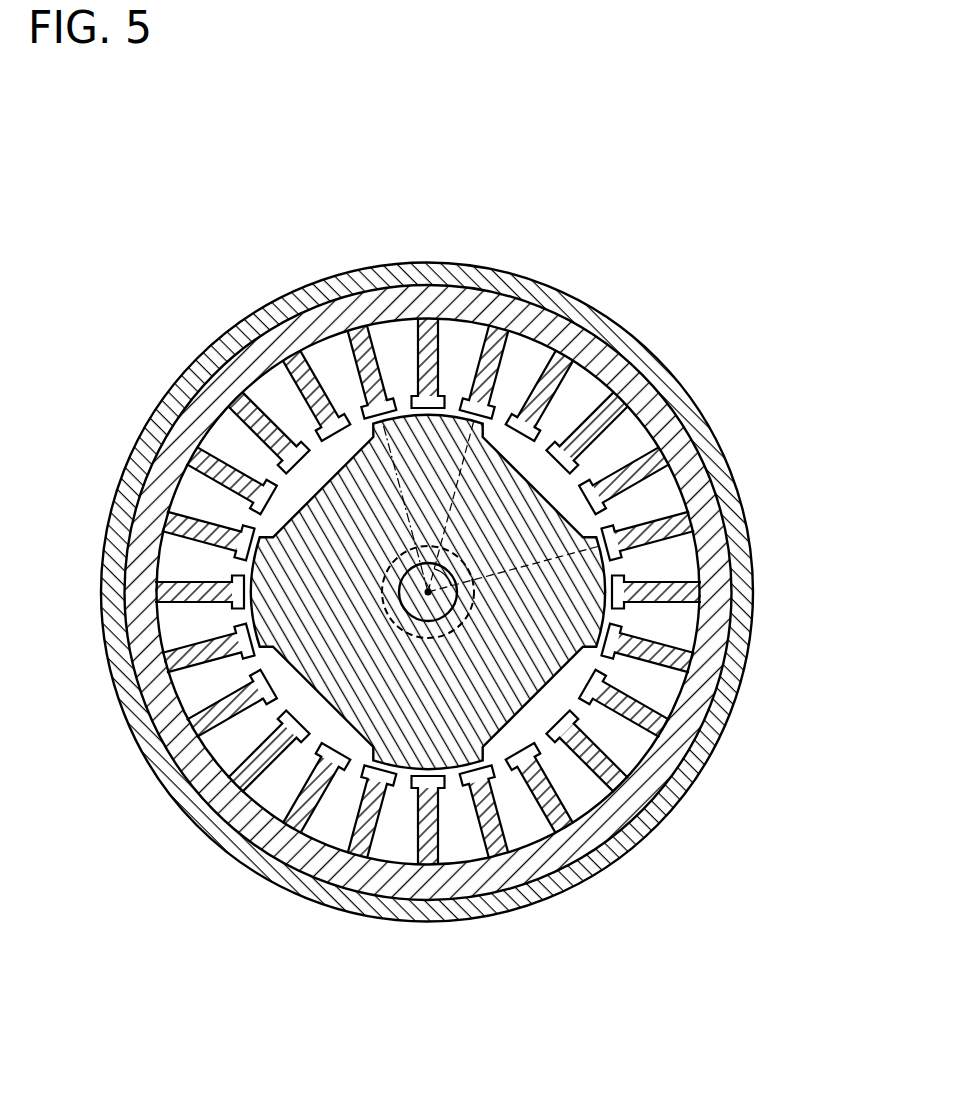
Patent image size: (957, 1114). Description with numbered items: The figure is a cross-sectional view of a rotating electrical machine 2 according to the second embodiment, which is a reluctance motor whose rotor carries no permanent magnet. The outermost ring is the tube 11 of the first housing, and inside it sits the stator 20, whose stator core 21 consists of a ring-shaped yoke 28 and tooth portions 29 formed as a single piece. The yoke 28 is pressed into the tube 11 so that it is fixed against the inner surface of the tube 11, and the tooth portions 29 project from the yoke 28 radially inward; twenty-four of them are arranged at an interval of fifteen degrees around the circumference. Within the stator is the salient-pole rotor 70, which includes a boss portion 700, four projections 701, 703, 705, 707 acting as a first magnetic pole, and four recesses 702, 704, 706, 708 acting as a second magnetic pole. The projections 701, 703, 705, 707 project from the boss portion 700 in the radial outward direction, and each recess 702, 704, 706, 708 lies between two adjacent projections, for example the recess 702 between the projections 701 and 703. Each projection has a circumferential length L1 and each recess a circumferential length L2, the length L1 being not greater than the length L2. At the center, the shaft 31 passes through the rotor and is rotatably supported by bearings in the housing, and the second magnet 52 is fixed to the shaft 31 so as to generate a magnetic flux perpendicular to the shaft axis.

The rotating electrical machine 2 is at (321, 178).
The tube 11 is at (611, 325).
The stator 20 is at (527, 482).
The stator core 21 is at (243, 202).
The yoke 28 is at (290, 354).
The tooth portions 29 is at (292, 325).
The shaft 31 is at (456, 598).
The second magnet 52 is at (468, 615).
The salient-pole rotor 70 is at (622, 568).
The boss portion 700 is at (345, 358).
The projection 701 is at (498, 391).
The recess 702 is at (634, 518).
The projection 703 is at (600, 626).
The recess 704 is at (557, 762).
The projection 705 is at (395, 760).
The recess 706 is at (312, 683).
The projection 707 is at (255, 603).
The recess 708 is at (303, 503).
The circumferential length of projection L1 is at (474, 421).
The circumferential length of recess L2 is at (599, 546).